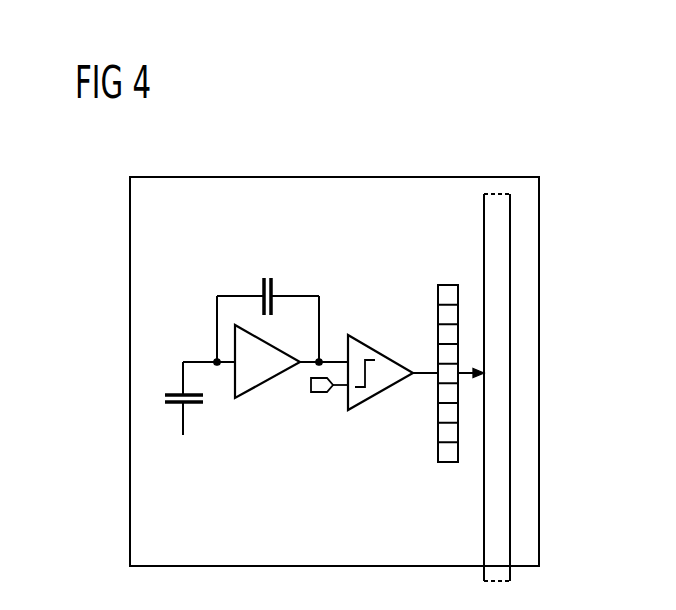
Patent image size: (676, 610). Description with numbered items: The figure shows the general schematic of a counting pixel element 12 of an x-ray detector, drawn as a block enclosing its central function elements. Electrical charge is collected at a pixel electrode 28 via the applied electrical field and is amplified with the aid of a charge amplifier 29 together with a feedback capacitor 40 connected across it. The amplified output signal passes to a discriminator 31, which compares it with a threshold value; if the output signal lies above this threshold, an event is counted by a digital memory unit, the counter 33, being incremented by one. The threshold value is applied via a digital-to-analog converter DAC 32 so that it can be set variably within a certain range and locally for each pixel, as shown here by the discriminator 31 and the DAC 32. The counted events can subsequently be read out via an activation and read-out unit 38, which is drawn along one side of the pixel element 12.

The counting pixel element 12 is at (129, 283).
The pixel electrode 28 is at (183, 435).
The charge amplifier 29 is at (262, 386).
The discriminator 31 is at (372, 395).
The digital-to-analog converter DAC 32 is at (318, 395).
The digital memory unit (counter) 33 is at (436, 318).
The activation and read-out unit 38 is at (511, 376).
The feedback capacitor 40 is at (262, 282).